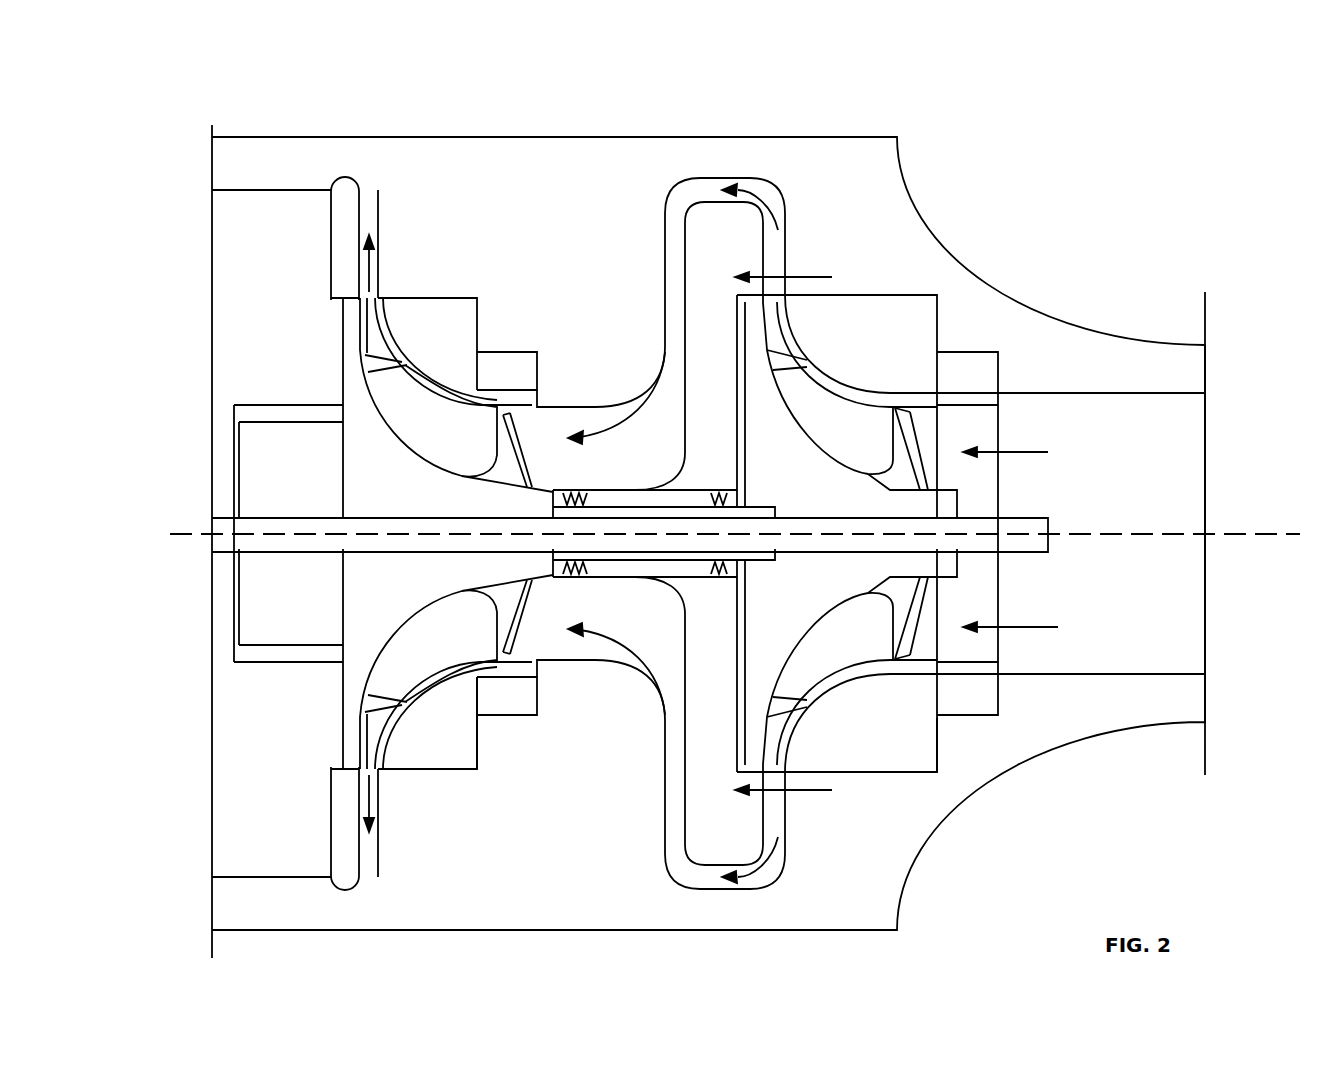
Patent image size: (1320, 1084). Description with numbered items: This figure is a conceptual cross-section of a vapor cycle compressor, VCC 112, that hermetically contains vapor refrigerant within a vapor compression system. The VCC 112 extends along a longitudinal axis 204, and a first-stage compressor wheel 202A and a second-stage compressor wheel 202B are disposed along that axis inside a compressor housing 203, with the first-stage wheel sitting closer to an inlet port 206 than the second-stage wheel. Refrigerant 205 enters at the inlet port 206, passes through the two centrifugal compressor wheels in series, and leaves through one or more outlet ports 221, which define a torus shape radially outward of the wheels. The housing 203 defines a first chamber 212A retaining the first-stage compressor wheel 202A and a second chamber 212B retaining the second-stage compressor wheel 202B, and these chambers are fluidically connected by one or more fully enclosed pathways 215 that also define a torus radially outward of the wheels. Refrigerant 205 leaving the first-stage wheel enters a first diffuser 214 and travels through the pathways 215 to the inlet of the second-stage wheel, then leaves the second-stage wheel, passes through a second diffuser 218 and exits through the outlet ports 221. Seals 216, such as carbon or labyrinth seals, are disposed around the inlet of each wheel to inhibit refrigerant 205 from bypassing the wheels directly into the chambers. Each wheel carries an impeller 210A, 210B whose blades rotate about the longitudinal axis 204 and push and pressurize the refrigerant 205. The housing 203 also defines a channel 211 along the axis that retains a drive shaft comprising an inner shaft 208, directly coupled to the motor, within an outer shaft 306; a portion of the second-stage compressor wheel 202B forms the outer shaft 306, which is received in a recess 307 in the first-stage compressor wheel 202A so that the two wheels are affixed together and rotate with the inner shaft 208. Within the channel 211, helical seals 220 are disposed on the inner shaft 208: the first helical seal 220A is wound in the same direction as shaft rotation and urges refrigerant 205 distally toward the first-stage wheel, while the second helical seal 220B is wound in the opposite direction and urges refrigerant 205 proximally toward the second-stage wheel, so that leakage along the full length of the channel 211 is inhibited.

The vapor cycle compressor 112 is at (213, 84).
The first-stage compressor wheel 202A is at (959, 383).
The second-stage compressor wheel 202B is at (437, 370).
The compressor housing 203 is at (630, 182).
The longitudinal axis 204 is at (1256, 533).
The refrigerant 205 is at (1023, 450).
The inlet port 206 is at (1132, 500).
The inner shaft 208 is at (1030, 553).
The first impeller 210A is at (832, 425).
The second impeller 210B is at (437, 420).
The channel 211 is at (680, 575).
The first chamber 212A is at (968, 730).
The second chamber 212B is at (466, 748).
The first diffuser 214 is at (779, 533).
The pathway 215 is at (787, 207).
The seal 216 is at (520, 368).
The second diffuser 218 is at (383, 276).
The helical seals 220 is at (383, 190).
The outlet port 221 is at (383, 873).
The first helical seal 220A is at (700, 493).
The second helical seal 220B is at (540, 493).
The outer shaft 306 is at (760, 515).
The recess 307 is at (778, 518).